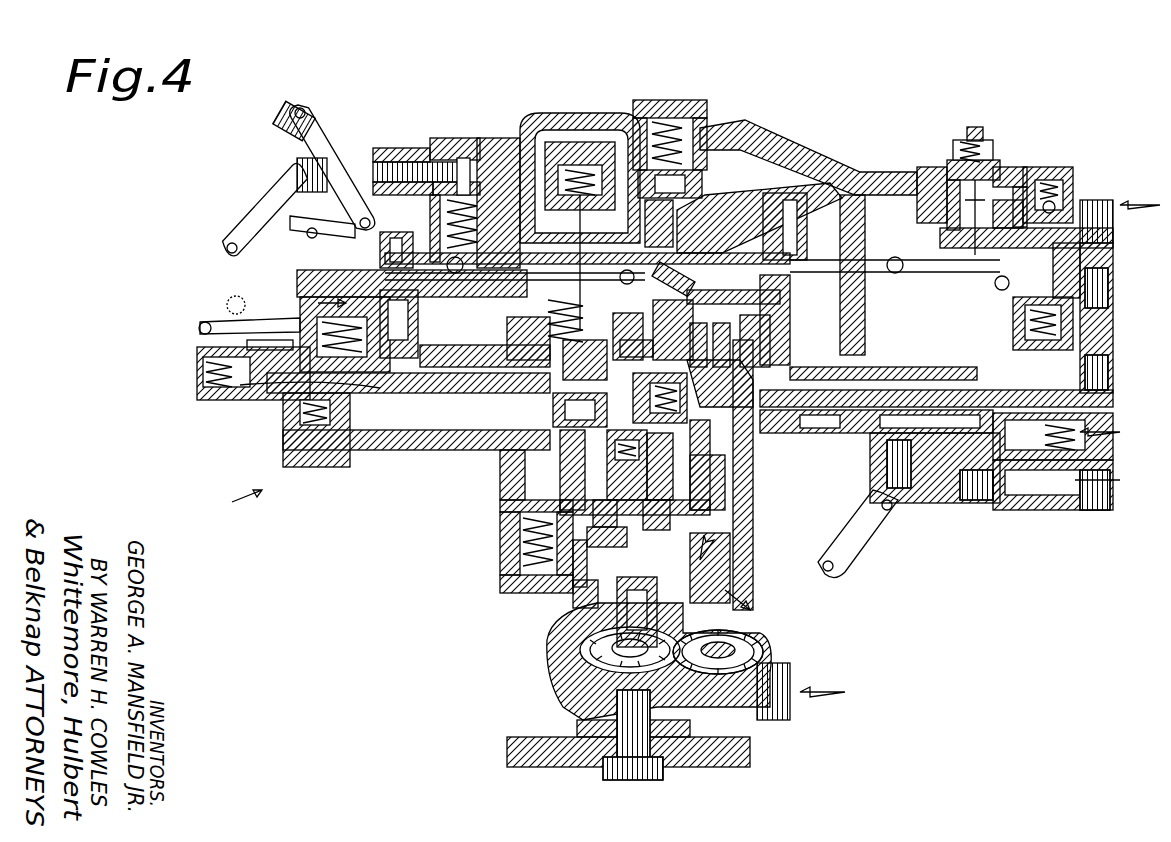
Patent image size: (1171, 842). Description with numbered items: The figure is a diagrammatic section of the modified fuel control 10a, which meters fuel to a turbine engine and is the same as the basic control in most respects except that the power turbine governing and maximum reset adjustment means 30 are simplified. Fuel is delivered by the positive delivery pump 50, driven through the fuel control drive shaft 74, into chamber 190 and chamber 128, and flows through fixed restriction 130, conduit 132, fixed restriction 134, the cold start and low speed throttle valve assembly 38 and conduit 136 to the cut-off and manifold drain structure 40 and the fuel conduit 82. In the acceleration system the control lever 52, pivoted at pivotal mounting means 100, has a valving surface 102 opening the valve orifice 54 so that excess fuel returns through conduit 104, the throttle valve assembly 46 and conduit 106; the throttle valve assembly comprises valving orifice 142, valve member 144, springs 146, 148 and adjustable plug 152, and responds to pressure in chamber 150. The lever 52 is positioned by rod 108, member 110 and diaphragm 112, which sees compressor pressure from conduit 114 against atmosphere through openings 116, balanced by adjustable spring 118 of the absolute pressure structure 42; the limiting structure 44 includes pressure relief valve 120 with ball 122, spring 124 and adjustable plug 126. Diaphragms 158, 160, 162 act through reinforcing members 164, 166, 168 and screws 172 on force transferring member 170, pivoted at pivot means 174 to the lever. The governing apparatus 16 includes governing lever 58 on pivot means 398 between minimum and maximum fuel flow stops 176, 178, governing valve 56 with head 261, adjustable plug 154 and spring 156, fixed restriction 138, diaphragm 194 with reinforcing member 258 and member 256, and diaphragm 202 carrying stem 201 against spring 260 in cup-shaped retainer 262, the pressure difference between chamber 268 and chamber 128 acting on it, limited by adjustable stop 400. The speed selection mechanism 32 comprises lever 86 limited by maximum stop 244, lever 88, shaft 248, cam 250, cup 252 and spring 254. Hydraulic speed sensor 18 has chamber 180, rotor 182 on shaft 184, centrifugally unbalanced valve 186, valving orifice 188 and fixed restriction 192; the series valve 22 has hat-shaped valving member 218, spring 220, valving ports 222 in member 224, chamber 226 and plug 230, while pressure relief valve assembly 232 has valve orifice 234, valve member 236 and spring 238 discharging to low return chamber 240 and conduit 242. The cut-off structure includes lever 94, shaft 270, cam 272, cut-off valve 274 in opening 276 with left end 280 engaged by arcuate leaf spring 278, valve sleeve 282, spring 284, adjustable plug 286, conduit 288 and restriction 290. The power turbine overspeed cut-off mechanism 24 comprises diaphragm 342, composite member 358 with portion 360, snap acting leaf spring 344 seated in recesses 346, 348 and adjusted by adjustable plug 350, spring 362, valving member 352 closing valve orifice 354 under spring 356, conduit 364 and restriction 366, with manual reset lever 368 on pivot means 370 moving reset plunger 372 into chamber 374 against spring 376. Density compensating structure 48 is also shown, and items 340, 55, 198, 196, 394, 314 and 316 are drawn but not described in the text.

The fuel control 10a is at (180, 190).
The governing speed selection mechanism 32 is at (255, 178).
The lever 86 is at (228, 246).
The member 256 is at (270, 212).
The maximum stop 244 is at (300, 112).
The shaft 248 is at (395, 160).
The lever 88 is at (390, 165).
The cam 250 is at (465, 157).
The cup 252 is at (495, 150).
The adjustable plug 154 is at (540, 115).
The spring 148 is at (590, 120).
The spring 156 is at (585, 140).
The density compensating structure 48 is at (640, 105).
The valving orifice 142 is at (665, 120).
The throttle valve assembly 46 is at (670, 125).
The adjustable plug 152 is at (705, 110).
The spring 146 is at (715, 130).
The valve member 144 is at (735, 140).
The chamber 150 is at (790, 160).
The diaphragm 162 is at (825, 185).
The reinforcing member 168 is at (855, 190).
The diaphragm 112 is at (925, 175).
The adjustable spring 118 is at (965, 135).
The structure for reducing compressor pressure to absolute pressure 42 is at (990, 140).
The openings 116 is at (1010, 170).
The adjustable plug 126 is at (1045, 165).
The spring 124 is at (1065, 170).
The structure for limiting maximum compressor pressure 44 is at (1100, 180).
The pressure relief valve 120 is at (1085, 190).
The ball 122 is at (1080, 205).
The conduit 114 is at (1115, 215).
The passage 340 is at (1000, 221).
The member 110 is at (945, 230).
The rod 108 is at (960, 250).
The force transferring member 170 is at (875, 210).
The pivot means 174 is at (875, 265).
The conduit 104 is at (740, 205).
The fixed restriction 138 is at (620, 210).
The fixed restriction 130 is at (615, 225).
The governing valve 56 is at (555, 205).
The maximum reset adjustment means 30 is at (620, 268).
The pivot means 398 is at (660, 285).
The cup-shaped retainer 262 is at (580, 310).
The spring 260 is at (555, 300).
The head 261 is at (520, 290).
The stem 201 is at (520, 305).
The diaphragm reinforcing member 258 is at (520, 320).
The maximum fuel flow stop 178 is at (445, 280).
The diaphragm 194 is at (445, 320).
The minimum fuel flow stop 176 is at (380, 258).
The spring 254 is at (430, 230).
The spring 55 is at (445, 250).
The governing lever 58 is at (375, 275).
The spring 362 is at (330, 285).
The governing apparatus 16 is at (285, 268).
The flange 198 is at (295, 285).
The diaphragm 342 is at (355, 313).
The pivot means 370 is at (220, 318).
The reset plunger 372 is at (265, 325).
The manual reset lever 368 is at (200, 330).
The spring 376 is at (240, 345).
The adjustable plug 350 is at (200, 370).
The recess 346 is at (235, 400).
The chamber 374 is at (240, 410).
The snap acting leaf spring 344 is at (255, 420).
The spring 356 is at (265, 440).
The power turbine overspeed cut-off mechanism 24 is at (260, 490).
The drain 196 is at (305, 490).
The valve orifice 354 is at (340, 460).
The valving member 352 is at (370, 460).
The conduit 364 is at (400, 460).
The composite member 358 is at (415, 355).
The recess 348 is at (385, 385).
The portion 360 is at (380, 395).
The chamber 190 is at (500, 410).
The diaphragm 202 is at (562, 354).
The chamber 268 is at (590, 352).
The passage 394 is at (576, 368).
The valving ports 222 is at (650, 390).
The member 224 is at (612, 408).
The hat-shaped valving member 218 is at (640, 415).
The centrifugally unbalanced valve 186 is at (580, 475).
The valve orifice 234 is at (570, 495).
The valve member 236 is at (510, 545).
The pressure relief valve assembly 232 is at (505, 590).
The spring 238 is at (520, 605).
The low return chamber 240 is at (560, 600).
The shaft 184 is at (600, 560).
The hydraulic speed sensor 18 is at (765, 600).
The positive delivery pump 50 is at (770, 650).
The conduit 242 is at (550, 680).
The fuel control drive shaft 74 is at (650, 780).
The rotor 182 is at (740, 520).
The fixed restriction 192 is at (735, 505).
The chamber 180 is at (730, 495).
The valving orifice 188 is at (725, 485).
The plug 230 is at (730, 470).
The series valve 22 is at (800, 455).
The restriction 366 is at (775, 410).
The arcuate leaf spring 278 is at (862, 418).
The cam 272 is at (900, 425).
The cut-off valve 274 is at (935, 425).
The left end 280 is at (950, 400).
The valve sleeve 282 is at (1020, 415).
The spring 284 is at (1045, 433).
The adjustable plug 286 is at (1113, 425).
The shaft 270 is at (880, 480).
The cut-off and manifold drain structure 40 is at (870, 505).
The opening 276 is at (945, 480).
The fuel conduit 82 is at (985, 510).
The conduit 288 is at (1025, 505).
The restriction 290 is at (1070, 505).
The lever 94 is at (845, 572).
The control lever 52 is at (800, 265).
The valve orifice 54 is at (770, 270).
The valving surface 102 is at (780, 290).
The chamber 128 is at (785, 305).
The diaphragm 160 is at (800, 325).
The conduit 132 is at (795, 340).
The diaphragm 158 is at (790, 360).
The spring 220 is at (850, 372).
The chamber 226 is at (820, 393).
The conduit 106 is at (872, 397).
The screws 172 is at (880, 295).
The reinforcing member 166 is at (880, 313).
The reinforcing member 164 is at (880, 343).
The pivotal mounting means 100 is at (1000, 283).
The cold start and low speed throttle valve assembly 38 is at (1045, 300).
The port 314 is at (1115, 292).
The conduit 136 is at (1115, 350).
The port 316 is at (1115, 370).
The adjustable stop 400 is at (729, 320).
The fixed restriction 134 is at (1010, 365).